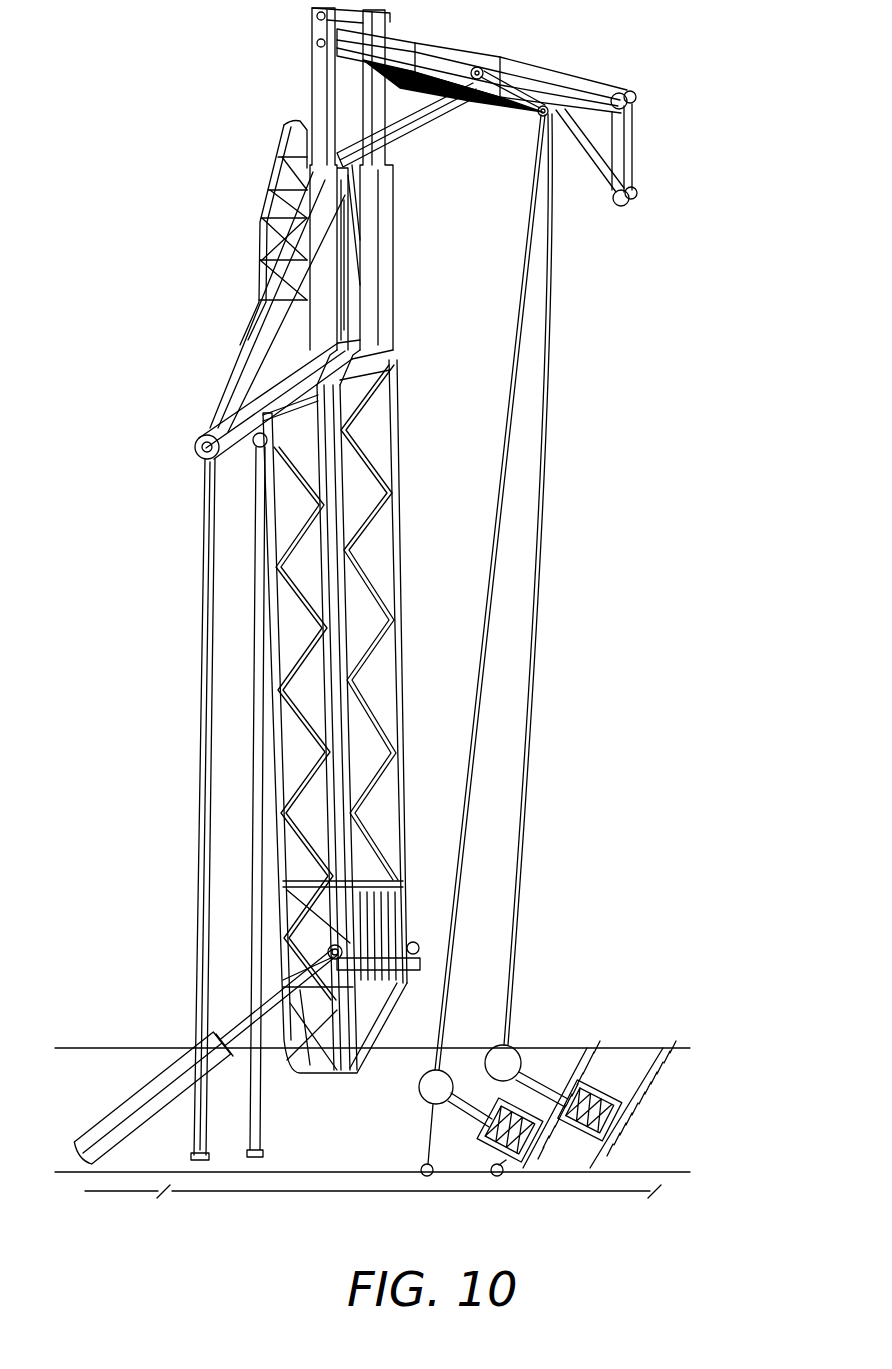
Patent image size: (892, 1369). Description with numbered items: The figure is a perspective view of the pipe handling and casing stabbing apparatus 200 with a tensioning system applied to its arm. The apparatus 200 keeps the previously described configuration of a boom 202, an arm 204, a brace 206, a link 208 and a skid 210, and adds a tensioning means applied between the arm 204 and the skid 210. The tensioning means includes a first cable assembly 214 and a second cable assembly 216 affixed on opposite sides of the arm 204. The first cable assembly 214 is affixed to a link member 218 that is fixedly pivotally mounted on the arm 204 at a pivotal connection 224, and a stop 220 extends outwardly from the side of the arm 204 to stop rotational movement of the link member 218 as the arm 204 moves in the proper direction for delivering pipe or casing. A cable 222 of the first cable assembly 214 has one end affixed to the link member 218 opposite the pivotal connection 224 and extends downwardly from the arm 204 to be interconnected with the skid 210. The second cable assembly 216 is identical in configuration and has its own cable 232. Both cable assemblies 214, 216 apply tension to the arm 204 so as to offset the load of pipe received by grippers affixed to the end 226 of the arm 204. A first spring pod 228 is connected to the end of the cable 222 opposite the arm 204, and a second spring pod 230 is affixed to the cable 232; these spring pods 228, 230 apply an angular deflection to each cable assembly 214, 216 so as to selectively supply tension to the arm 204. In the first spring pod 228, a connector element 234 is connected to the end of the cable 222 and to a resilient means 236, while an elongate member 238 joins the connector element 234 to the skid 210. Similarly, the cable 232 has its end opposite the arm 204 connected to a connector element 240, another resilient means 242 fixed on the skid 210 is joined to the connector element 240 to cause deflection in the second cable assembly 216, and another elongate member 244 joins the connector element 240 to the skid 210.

The pipe handling and casing stabbing apparatus 200 is at (588, 536).
The boom 202 is at (400, 507).
The arm 204 is at (580, 79).
The brace 206 is at (392, 142).
The link 208 is at (204, 662).
The skid 210 is at (556, 424).
The first cable assembly 214 is at (506, 424).
The second cable assembly 216 is at (554, 342).
The link member 218 is at (519, 62).
The stop 220 is at (540, 117).
The cable 222 is at (518, 326).
The pivotal connection 224 is at (478, 64).
The end of arm 226 is at (634, 142).
The first spring pod 228 is at (410, 1108).
The second spring pod 230 is at (552, 1077).
The cable 232 is at (527, 726).
The connector element 234 is at (418, 1087).
The resilient means 236 is at (512, 1162).
The elongate member 238 is at (425, 1146).
The connector element 240 is at (512, 1046).
The resilient means 242 is at (614, 1095).
The elongate member 244 is at (497, 1164).